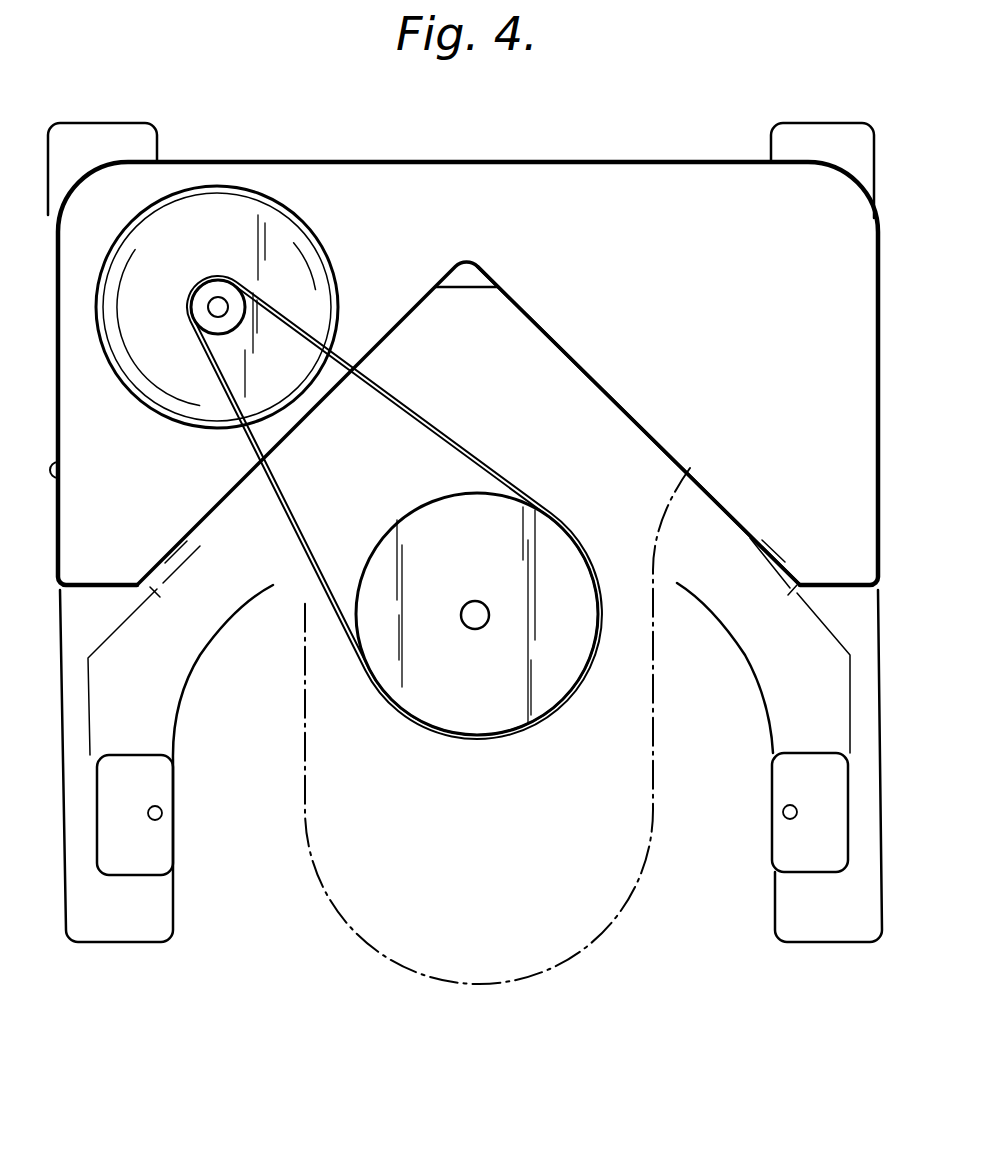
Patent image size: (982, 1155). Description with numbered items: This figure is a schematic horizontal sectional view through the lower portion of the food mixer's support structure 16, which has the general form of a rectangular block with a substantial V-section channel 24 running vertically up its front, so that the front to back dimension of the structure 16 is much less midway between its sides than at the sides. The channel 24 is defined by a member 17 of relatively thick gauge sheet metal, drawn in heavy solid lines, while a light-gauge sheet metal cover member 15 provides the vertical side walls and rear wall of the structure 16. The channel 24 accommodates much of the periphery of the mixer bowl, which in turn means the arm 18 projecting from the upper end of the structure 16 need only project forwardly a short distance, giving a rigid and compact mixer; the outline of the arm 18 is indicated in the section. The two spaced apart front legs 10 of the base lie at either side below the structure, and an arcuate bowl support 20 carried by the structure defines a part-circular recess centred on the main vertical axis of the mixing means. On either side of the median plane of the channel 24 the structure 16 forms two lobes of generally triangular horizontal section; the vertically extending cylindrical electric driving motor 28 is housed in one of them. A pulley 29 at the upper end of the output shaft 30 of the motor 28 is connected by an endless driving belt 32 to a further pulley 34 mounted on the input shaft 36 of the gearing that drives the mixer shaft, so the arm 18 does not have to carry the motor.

The front legs 10 is at (160, 934).
The cover member 15 is at (63, 480).
The support structure 16 is at (667, 161).
The member 17 is at (660, 441).
The arm 18 is at (613, 923).
The bowl support 20 is at (170, 793).
The V-section channel 24 is at (523, 357).
The electric driving motor 28 is at (163, 402).
The pulley 29 is at (213, 290).
The output shaft 30 is at (206, 313).
The endless driving belt 32 is at (457, 455).
The further pulley 34 is at (481, 718).
The input shaft 36 is at (475, 605).